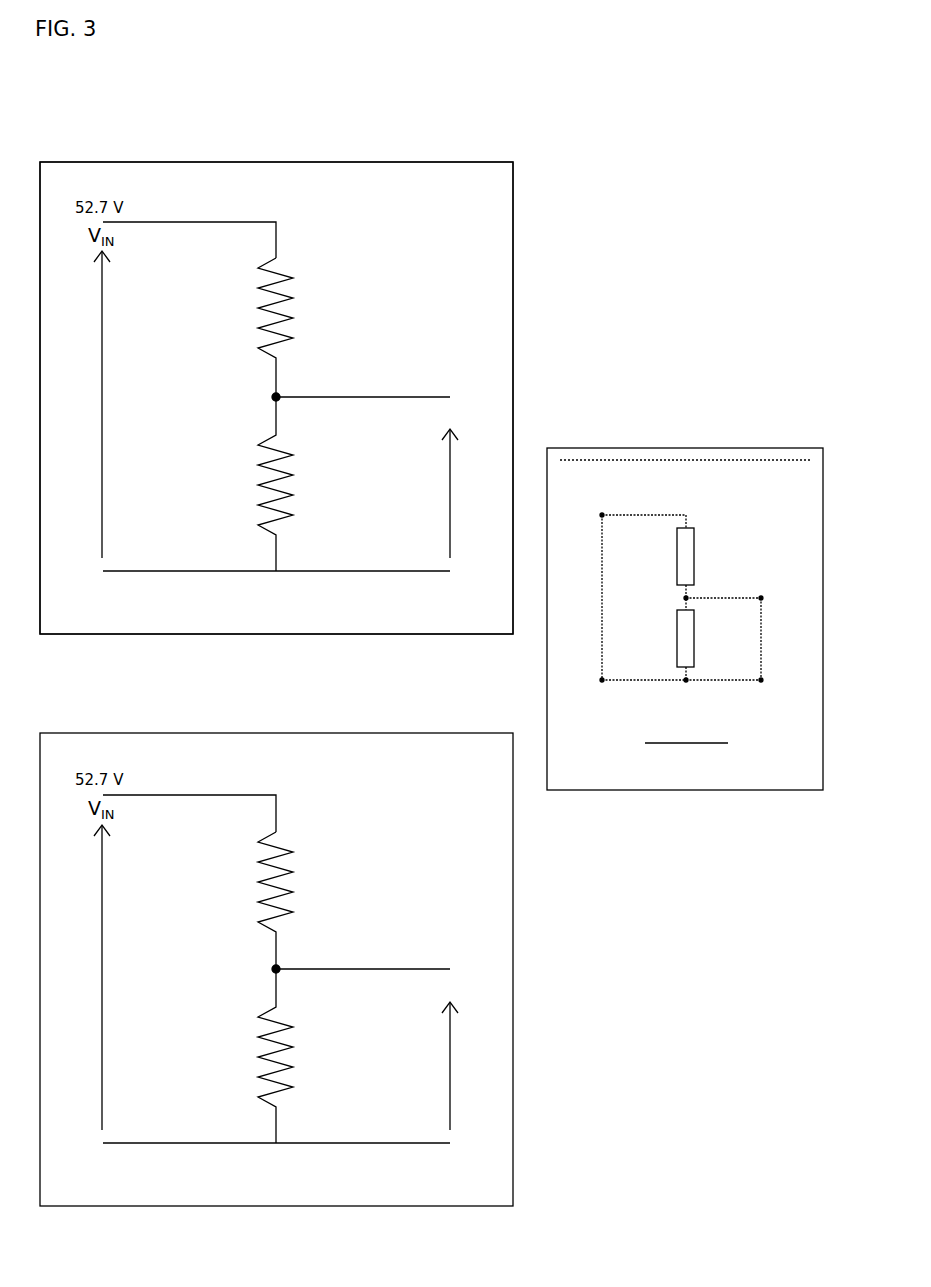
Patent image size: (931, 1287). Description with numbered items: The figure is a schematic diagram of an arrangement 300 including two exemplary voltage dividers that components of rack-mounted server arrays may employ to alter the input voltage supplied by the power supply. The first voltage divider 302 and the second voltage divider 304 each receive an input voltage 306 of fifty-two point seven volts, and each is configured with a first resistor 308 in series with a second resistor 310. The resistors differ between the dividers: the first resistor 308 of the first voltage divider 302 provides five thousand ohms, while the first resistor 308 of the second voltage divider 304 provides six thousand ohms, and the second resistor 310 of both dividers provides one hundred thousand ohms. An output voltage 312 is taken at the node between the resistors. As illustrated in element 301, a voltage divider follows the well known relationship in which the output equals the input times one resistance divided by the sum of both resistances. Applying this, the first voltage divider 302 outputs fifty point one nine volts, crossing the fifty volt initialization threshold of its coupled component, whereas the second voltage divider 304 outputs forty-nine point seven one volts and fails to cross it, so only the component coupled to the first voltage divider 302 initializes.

The arrangement 300 is at (829, 38).
The element illustrating voltage divider principles 301 is at (673, 448).
The first voltage divider 302 is at (439, 162).
The second voltage divider 304 is at (439, 733).
The input voltage 306 is at (118, 222).
The first resistor 308 is at (285, 277).
The second resistor 310 is at (280, 448).
The output voltage node 312 is at (408, 397).